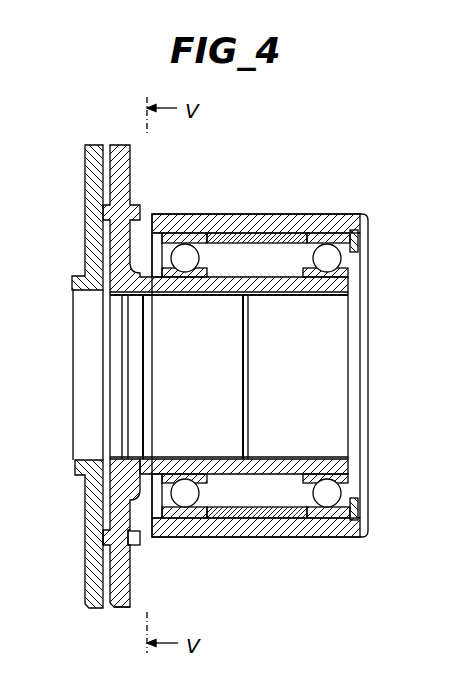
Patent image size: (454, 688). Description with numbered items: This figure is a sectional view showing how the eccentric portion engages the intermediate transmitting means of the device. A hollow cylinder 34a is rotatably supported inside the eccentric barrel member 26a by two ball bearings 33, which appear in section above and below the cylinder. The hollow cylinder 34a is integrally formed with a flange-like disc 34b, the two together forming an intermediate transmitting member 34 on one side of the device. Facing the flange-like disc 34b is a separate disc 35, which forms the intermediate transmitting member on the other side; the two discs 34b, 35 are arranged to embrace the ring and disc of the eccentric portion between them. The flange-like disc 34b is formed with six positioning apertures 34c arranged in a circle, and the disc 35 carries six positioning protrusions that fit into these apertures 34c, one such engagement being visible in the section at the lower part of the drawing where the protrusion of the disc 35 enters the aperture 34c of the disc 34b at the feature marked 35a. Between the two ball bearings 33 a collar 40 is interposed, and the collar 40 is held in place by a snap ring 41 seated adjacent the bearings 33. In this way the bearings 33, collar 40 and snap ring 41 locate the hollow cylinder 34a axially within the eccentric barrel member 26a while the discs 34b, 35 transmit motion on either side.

The eccentric barrel member 26a is at (256, 236).
The ball bearings 33 is at (185, 248).
The intermediate transmitting member 34 is at (131, 189).
The hollow cylinder 34a is at (345, 459).
The flange-like disc 34b is at (116, 610).
The positioning apertures 34c is at (140, 537).
The disc 35 is at (85, 505).
The hole in flange 35a is at (130, 545).
The collar 40 is at (288, 232).
The snap ring 41 is at (358, 244).